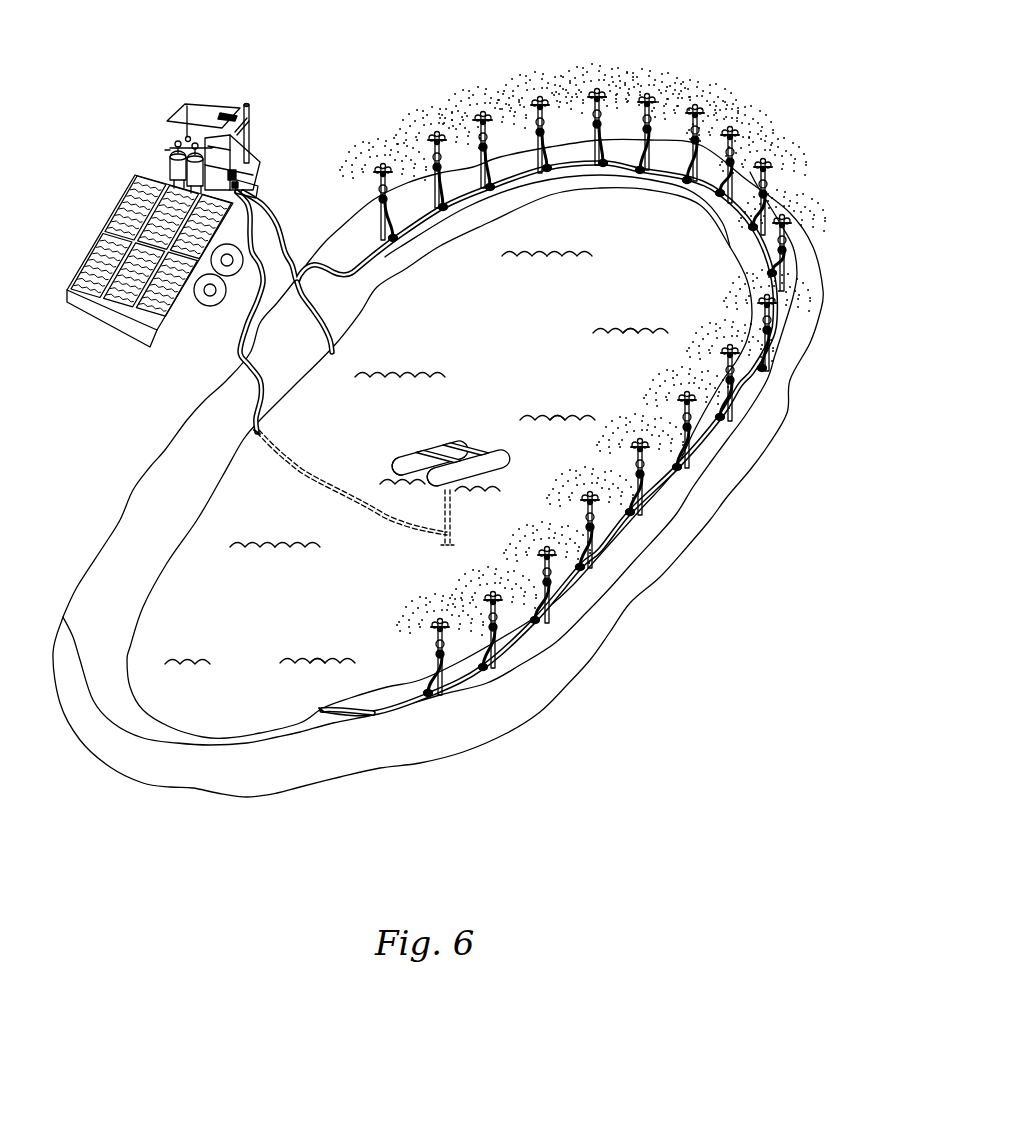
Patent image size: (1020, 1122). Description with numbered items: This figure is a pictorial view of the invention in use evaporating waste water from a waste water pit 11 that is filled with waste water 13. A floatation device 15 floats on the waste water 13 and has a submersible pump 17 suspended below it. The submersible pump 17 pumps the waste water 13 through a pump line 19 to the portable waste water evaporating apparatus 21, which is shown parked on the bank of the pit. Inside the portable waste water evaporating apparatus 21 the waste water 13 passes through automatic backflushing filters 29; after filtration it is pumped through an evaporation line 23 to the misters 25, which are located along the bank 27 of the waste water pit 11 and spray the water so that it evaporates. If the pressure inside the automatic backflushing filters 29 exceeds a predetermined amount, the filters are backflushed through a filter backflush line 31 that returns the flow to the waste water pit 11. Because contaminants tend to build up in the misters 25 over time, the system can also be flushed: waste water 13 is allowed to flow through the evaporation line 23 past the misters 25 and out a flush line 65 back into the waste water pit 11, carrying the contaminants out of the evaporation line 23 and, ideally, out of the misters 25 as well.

The waste water pit 11 is at (207, 802).
The waste water 13 is at (298, 610).
The floatation device 15 is at (453, 447).
The submersible pump 17 is at (447, 548).
The pump line 19 is at (277, 453).
The portable waste water evaporating apparatus 21 is at (206, 175).
The evaporation line 23 is at (374, 261).
The misters 25 is at (645, 102).
The bank 27 is at (627, 578).
The automatic backflushing filters 29 is at (172, 157).
The filter backflush line 31 is at (313, 304).
The flush line 65 is at (354, 710).